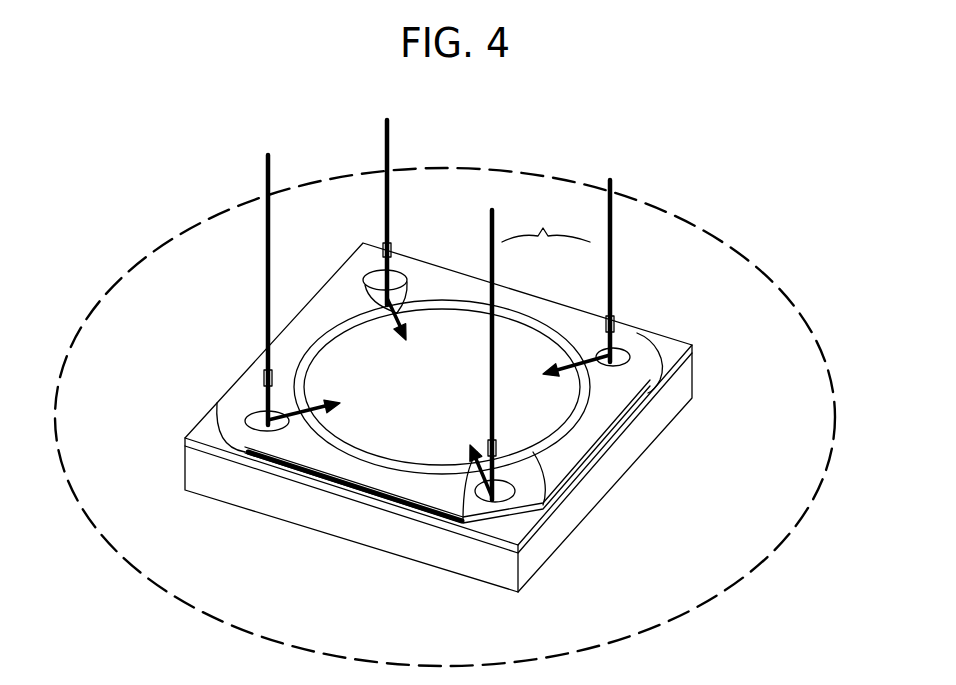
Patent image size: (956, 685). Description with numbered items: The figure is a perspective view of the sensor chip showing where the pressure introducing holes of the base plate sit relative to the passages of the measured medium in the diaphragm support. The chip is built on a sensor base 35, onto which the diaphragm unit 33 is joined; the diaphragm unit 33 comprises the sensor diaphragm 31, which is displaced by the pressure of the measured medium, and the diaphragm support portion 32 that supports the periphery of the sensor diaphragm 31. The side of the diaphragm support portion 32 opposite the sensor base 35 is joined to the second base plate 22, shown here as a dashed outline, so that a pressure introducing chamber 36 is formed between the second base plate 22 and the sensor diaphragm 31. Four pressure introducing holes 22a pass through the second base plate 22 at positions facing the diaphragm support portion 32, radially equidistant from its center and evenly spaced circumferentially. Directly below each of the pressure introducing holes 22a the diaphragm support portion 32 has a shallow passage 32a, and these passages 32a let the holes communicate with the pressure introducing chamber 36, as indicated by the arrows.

The second base plate 22 is at (677, 215).
The pressure introducing holes 22a is at (393, 248).
The sensor diaphragm 31 is at (503, 357).
The diaphragm support portion 32 is at (573, 323).
The passages 32a is at (370, 287).
The diaphragm unit 33 is at (546, 219).
The sensor base 35 is at (298, 512).
The pressure introducing chamber 36 is at (350, 363).